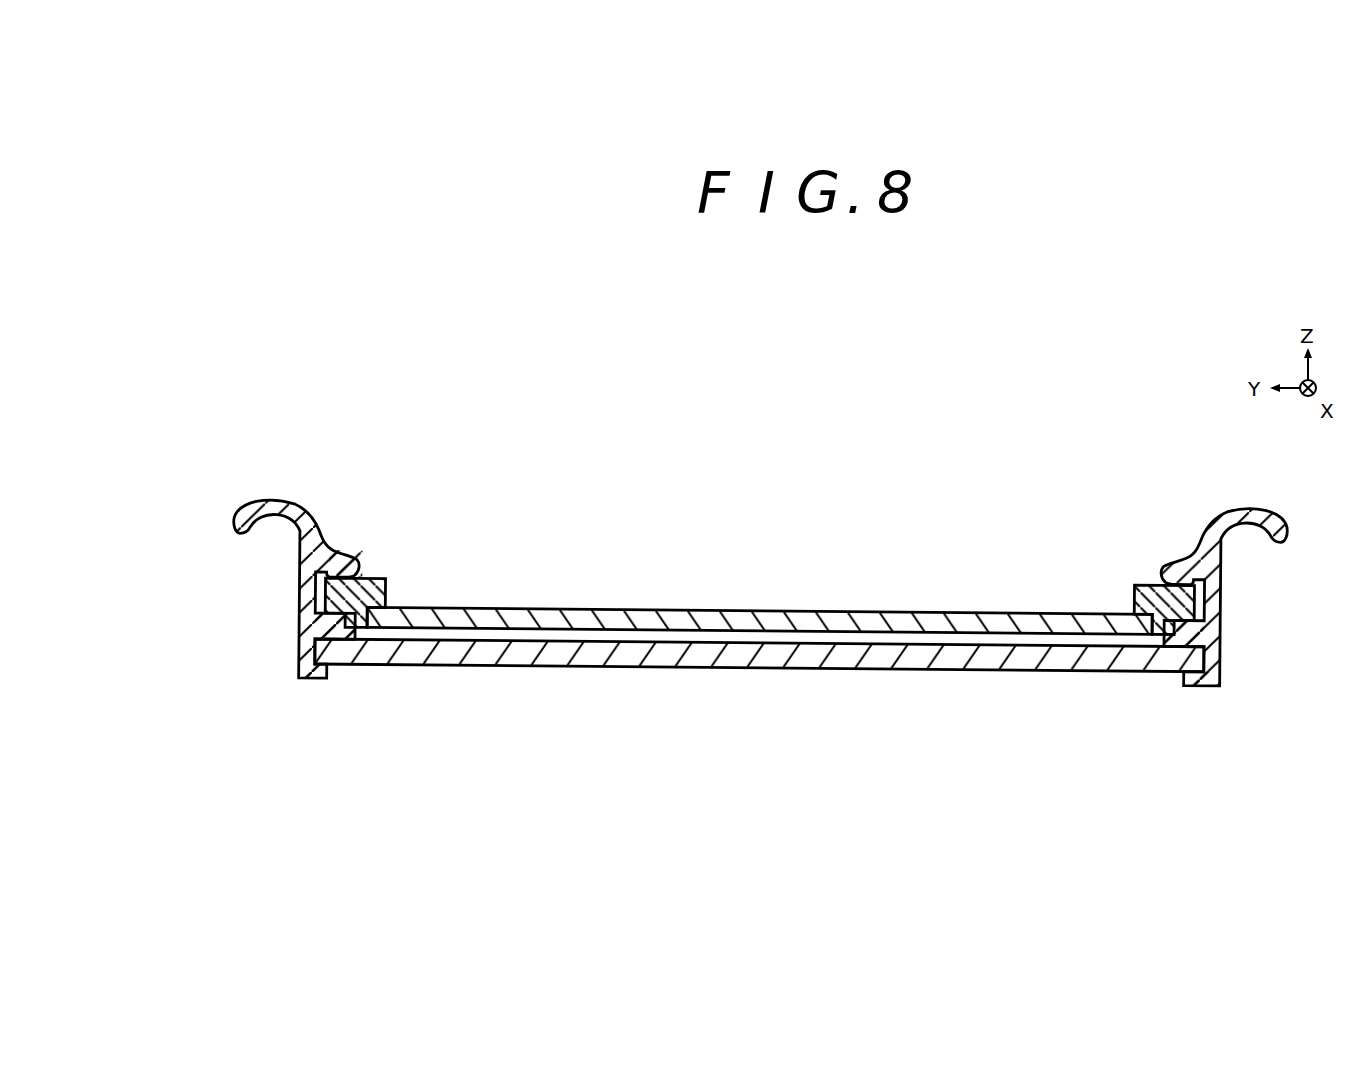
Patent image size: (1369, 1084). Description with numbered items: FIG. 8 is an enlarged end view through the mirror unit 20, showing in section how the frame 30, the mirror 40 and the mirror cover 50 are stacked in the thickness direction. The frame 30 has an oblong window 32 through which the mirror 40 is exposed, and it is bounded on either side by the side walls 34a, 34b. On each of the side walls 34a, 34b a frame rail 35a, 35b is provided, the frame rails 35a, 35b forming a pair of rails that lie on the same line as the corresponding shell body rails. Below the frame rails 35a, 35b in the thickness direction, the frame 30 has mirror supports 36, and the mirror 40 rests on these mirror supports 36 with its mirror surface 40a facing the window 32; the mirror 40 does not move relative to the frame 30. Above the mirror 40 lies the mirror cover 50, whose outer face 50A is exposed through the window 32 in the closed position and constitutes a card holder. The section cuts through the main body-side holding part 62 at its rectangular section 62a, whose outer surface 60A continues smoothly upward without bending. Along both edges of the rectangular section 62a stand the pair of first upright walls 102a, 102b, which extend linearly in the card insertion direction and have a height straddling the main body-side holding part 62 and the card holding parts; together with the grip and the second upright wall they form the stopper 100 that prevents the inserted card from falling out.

The mirror unit 20 is at (295, 573).
The frame 30 is at (1247, 613).
The window 32 is at (360, 562).
The side wall 34a is at (1222, 632).
The side wall 34b is at (299, 628).
The frame rail 35a is at (1172, 640).
The frame rail 35b is at (343, 628).
The mirror support 36 is at (322, 680).
The mirror 40 is at (759, 707).
The mirror surface 40a is at (1000, 641).
The mirror cover 50 is at (760, 540).
The outer face 50A is at (760, 550).
The outer surface 60A is at (760, 564).
The main body-side holding part 62 is at (760, 580).
The rectangular section 62a is at (835, 624).
The stopper 100 is at (779, 552).
The first upright wall 102a is at (1135, 598).
The first upright wall 102b is at (388, 597).